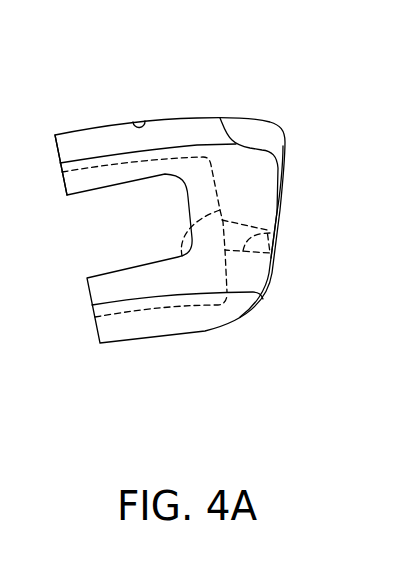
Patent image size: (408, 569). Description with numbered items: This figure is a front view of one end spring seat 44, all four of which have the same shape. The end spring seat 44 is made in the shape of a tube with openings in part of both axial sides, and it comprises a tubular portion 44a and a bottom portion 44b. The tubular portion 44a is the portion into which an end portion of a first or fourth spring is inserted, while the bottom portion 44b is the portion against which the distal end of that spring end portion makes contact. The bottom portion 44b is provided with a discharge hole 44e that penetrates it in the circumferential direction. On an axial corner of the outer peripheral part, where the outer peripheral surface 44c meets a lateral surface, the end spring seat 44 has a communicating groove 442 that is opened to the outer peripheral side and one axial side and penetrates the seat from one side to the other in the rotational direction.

The end spring seat 44 is at (286, 104).
The tubular portion 44a is at (78, 170).
The bottom portion 44b is at (182, 256).
The outer peripheral surface 44c is at (237, 120).
The discharge hole 44e is at (272, 235).
The communicating groove 442 is at (163, 133).